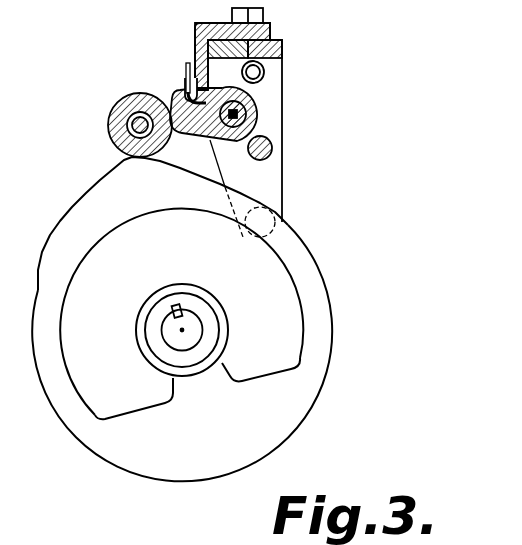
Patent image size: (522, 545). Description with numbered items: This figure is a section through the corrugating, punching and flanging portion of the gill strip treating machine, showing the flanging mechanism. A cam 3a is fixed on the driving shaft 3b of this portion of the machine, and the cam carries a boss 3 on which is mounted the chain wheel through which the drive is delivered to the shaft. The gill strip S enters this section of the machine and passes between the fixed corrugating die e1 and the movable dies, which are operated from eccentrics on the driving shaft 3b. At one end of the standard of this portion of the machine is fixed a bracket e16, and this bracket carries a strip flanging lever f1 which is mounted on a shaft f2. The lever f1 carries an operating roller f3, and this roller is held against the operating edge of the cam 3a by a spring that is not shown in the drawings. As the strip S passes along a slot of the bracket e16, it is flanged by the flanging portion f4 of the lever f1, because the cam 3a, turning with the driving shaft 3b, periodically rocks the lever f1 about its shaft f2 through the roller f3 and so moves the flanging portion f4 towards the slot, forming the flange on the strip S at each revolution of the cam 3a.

The boss 3 is at (210, 303).
The cam 3a is at (103, 178).
The driving shaft 3b is at (172, 333).
The fixed corrugating die e1 is at (240, 76).
The bracket e16 is at (272, 84).
The strip flanging lever f1 is at (176, 93).
The shaft f2 is at (262, 120).
The operating roller f3 is at (117, 132).
The flanging portion f4 is at (189, 90).
The gill strip s is at (185, 68).